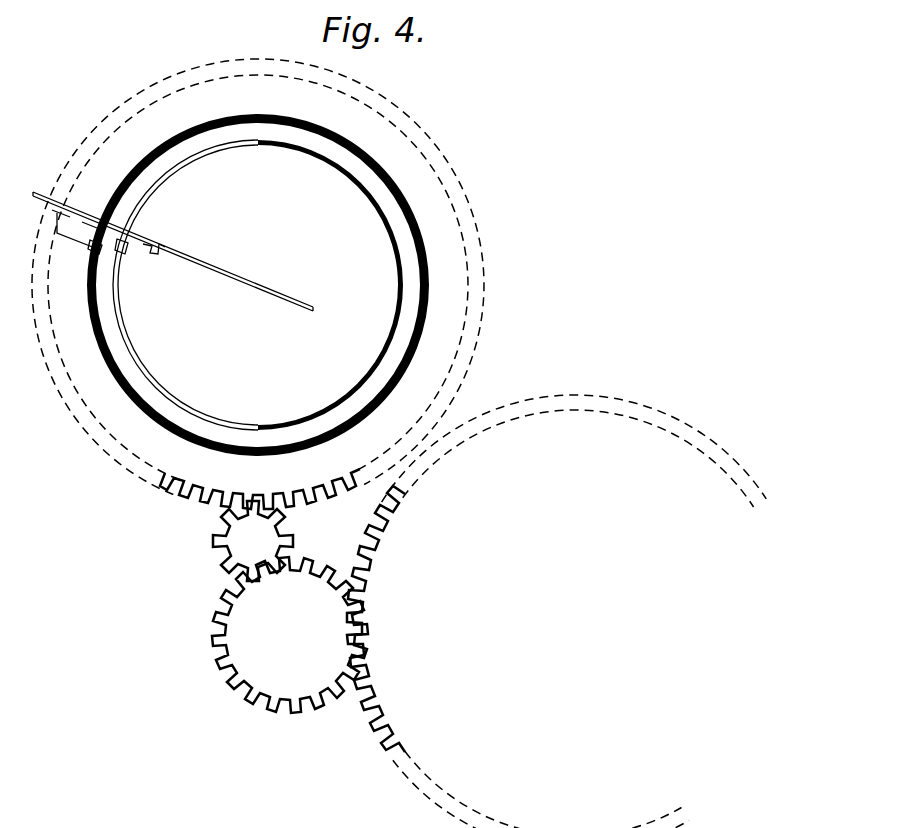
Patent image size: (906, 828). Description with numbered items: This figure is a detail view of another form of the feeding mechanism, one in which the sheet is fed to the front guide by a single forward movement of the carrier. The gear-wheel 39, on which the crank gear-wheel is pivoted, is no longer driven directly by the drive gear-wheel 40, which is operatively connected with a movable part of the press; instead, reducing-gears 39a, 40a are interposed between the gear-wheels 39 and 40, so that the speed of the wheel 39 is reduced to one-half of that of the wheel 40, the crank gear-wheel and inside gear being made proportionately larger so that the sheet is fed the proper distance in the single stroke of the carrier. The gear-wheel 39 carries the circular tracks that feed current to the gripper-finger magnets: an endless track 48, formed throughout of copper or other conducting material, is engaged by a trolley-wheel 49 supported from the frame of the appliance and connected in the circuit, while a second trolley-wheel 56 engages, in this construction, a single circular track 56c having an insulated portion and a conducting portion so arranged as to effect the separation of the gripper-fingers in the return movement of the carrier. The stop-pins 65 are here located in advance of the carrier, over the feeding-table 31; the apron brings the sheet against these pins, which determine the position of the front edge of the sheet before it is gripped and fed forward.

The feeding-table 31 is at (229, 276).
The gear-wheel 39 is at (430, 139).
The reducing-gear 39a is at (224, 541).
The drive gear-wheel 40 is at (556, 600).
The reducing-gear 40a is at (290, 644).
The endless track 48 is at (143, 170).
The trolley-wheel 49 is at (90, 247).
The trolley-wheel 56 is at (126, 254).
The single circular track 56c is at (133, 337).
The stop-pins 65 is at (160, 247).